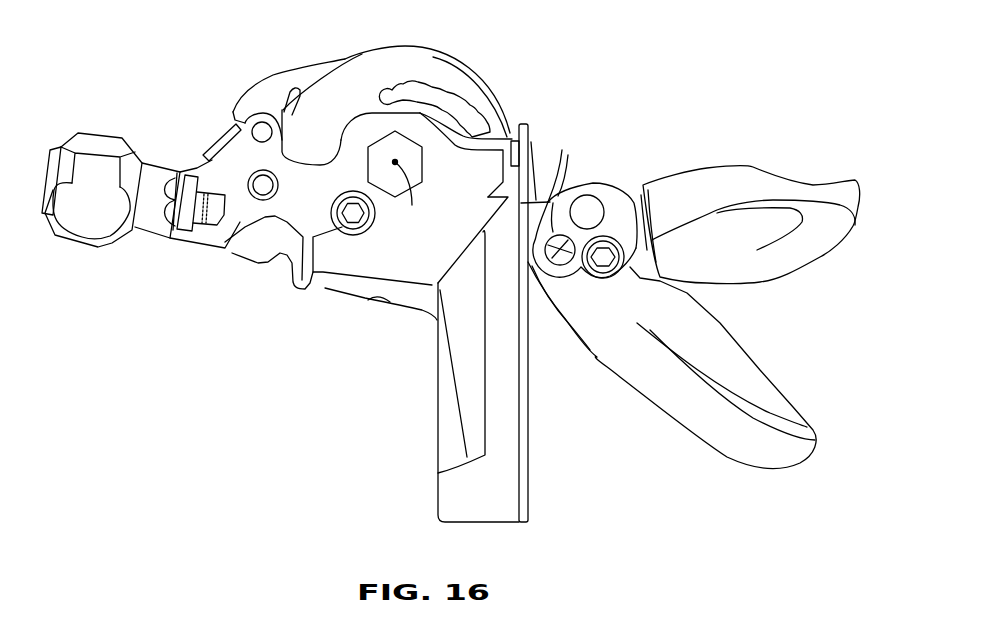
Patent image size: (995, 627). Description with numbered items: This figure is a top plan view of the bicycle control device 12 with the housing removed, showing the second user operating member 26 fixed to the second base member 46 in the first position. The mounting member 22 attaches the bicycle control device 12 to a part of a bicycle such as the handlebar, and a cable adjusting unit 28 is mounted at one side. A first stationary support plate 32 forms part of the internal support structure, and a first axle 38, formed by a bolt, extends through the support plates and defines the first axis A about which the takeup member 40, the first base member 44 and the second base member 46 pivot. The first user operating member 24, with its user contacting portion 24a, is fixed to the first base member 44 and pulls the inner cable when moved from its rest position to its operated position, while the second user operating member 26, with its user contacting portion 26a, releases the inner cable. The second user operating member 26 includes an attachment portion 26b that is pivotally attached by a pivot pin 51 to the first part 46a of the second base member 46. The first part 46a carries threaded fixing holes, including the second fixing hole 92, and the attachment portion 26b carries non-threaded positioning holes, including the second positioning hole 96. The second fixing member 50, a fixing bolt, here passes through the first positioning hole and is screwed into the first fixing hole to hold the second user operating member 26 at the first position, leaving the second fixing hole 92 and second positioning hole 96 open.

The bicycle control device 12 is at (592, 42).
The mounting member 22 is at (433, 429).
The first user operating member 24 is at (650, 408).
The user contacting portion 24a is at (700, 433).
The second user operating member 26 is at (757, 165).
The user contacting portion 26a is at (823, 185).
The attachment portion 26b is at (638, 187).
The cable adjusting unit 28 is at (105, 135).
The first stationary support plate 32 is at (195, 165).
The first axle 38 is at (427, 163).
The takeup member 40 is at (365, 45).
The first base member 44 is at (253, 93).
The second base member 46 is at (546, 178).
The first part 46a is at (533, 270).
The second fixing member 50 is at (608, 276).
The pivot pin 51 is at (587, 212).
The second fixing hole 92 is at (556, 190).
The second positioning hole 96 is at (563, 272).